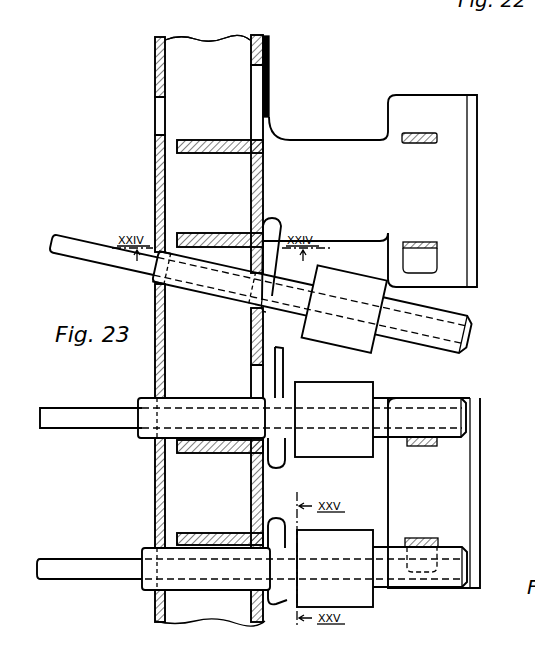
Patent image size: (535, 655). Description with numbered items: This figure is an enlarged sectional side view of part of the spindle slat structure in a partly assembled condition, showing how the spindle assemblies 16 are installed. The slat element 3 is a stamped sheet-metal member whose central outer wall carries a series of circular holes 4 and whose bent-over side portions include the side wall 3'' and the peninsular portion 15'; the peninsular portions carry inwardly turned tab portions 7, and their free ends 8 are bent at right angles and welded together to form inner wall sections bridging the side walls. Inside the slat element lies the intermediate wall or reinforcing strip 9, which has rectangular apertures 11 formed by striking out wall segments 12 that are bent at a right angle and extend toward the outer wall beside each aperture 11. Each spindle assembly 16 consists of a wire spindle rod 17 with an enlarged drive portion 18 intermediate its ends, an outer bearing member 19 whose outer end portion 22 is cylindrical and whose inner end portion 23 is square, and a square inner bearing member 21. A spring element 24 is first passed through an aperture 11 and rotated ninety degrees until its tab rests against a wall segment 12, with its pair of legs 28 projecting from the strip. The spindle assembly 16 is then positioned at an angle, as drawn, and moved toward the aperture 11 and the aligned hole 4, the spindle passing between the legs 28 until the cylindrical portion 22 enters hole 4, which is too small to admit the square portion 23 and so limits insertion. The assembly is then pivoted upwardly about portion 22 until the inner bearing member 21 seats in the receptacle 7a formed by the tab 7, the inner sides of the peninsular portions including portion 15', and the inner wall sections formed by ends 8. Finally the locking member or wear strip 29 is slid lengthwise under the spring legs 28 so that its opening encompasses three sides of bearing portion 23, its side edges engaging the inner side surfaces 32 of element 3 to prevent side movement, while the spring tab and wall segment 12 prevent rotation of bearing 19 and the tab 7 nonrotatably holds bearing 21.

The slat element 3 is at (210, 330).
The side wall 3'' is at (207, 27).
The circular hole 4 is at (154, 137).
The reinforcing strip 9 is at (257, 328).
The inner side surface 32 is at (268, 98).
The wall segment 12 is at (200, 155).
The peninsular portion 15' is at (366, 258).
The free end 8 is at (451, 341).
The receptacle 7a is at (464, 240).
The tab portion 7 is at (418, 144).
The spindle rod 17 is at (55, 254).
The outer bearing member 19 is at (287, 420).
The outer end portion 22 is at (154, 277).
The inner end portion 23 is at (221, 297).
The legs 28 is at (252, 318).
The rectangular aperture 11 is at (252, 384).
The locking member 29 is at (284, 352).
The spring element 24 is at (278, 217).
The spindle assembly 16 is at (384, 432).
The drive portion 18 is at (350, 356).
The inner bearing member 21 is at (416, 350).